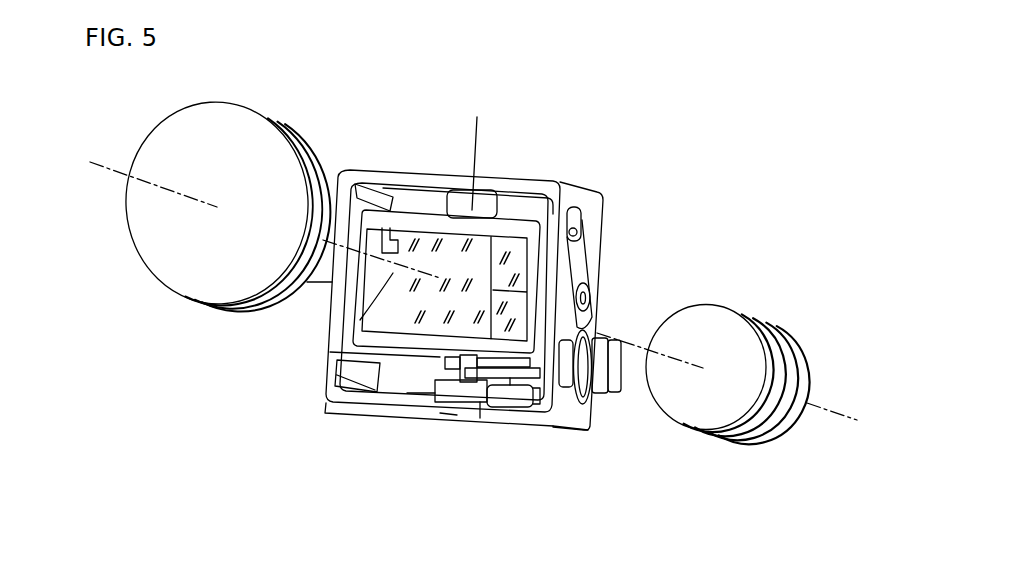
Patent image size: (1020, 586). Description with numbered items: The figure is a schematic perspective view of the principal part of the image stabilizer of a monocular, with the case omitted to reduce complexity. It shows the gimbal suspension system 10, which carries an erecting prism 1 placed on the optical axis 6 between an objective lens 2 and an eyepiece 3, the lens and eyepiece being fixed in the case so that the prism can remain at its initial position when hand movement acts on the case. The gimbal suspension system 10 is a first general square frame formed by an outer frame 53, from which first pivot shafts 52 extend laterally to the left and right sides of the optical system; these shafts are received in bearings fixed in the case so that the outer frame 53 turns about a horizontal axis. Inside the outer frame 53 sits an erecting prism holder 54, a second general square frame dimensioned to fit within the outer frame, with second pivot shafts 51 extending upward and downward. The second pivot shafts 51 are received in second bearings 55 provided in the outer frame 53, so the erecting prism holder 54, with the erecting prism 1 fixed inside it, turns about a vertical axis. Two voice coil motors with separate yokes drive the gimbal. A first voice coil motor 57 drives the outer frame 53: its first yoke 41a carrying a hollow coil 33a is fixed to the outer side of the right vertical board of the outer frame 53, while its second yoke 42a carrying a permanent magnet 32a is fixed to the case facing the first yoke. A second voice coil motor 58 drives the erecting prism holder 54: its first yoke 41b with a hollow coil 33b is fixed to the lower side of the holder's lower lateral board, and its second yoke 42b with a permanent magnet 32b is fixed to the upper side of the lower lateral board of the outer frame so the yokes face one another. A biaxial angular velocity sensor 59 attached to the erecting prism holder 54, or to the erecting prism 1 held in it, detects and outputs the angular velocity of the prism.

The erecting prism 1 is at (435, 240).
The objective lens 2 is at (190, 273).
The eyepiece 3 is at (770, 327).
The optical axis 6 is at (838, 416).
The gimbal suspension system 10 is at (385, 158).
The permanent magnet 32a is at (615, 402).
The permanent magnet 32b is at (508, 397).
The hollow coil 33a is at (573, 415).
The hollow coil 33b is at (477, 423).
The first yoke 41a is at (563, 425).
The first yoke 41b is at (473, 413).
The second yoke 42a is at (623, 392).
The second yoke 42b is at (523, 410).
The second pivot shafts 51 is at (473, 130).
The first pivot shafts 52 is at (592, 298).
The outer frame 53 is at (570, 184).
The erecting prism holder 54 is at (373, 340).
The second bearings 55 is at (484, 200).
The first voice coil motor 57 is at (598, 415).
The second voice coil motor 58 is at (499, 420).
The biaxial angular velocity sensor 59 is at (350, 320).